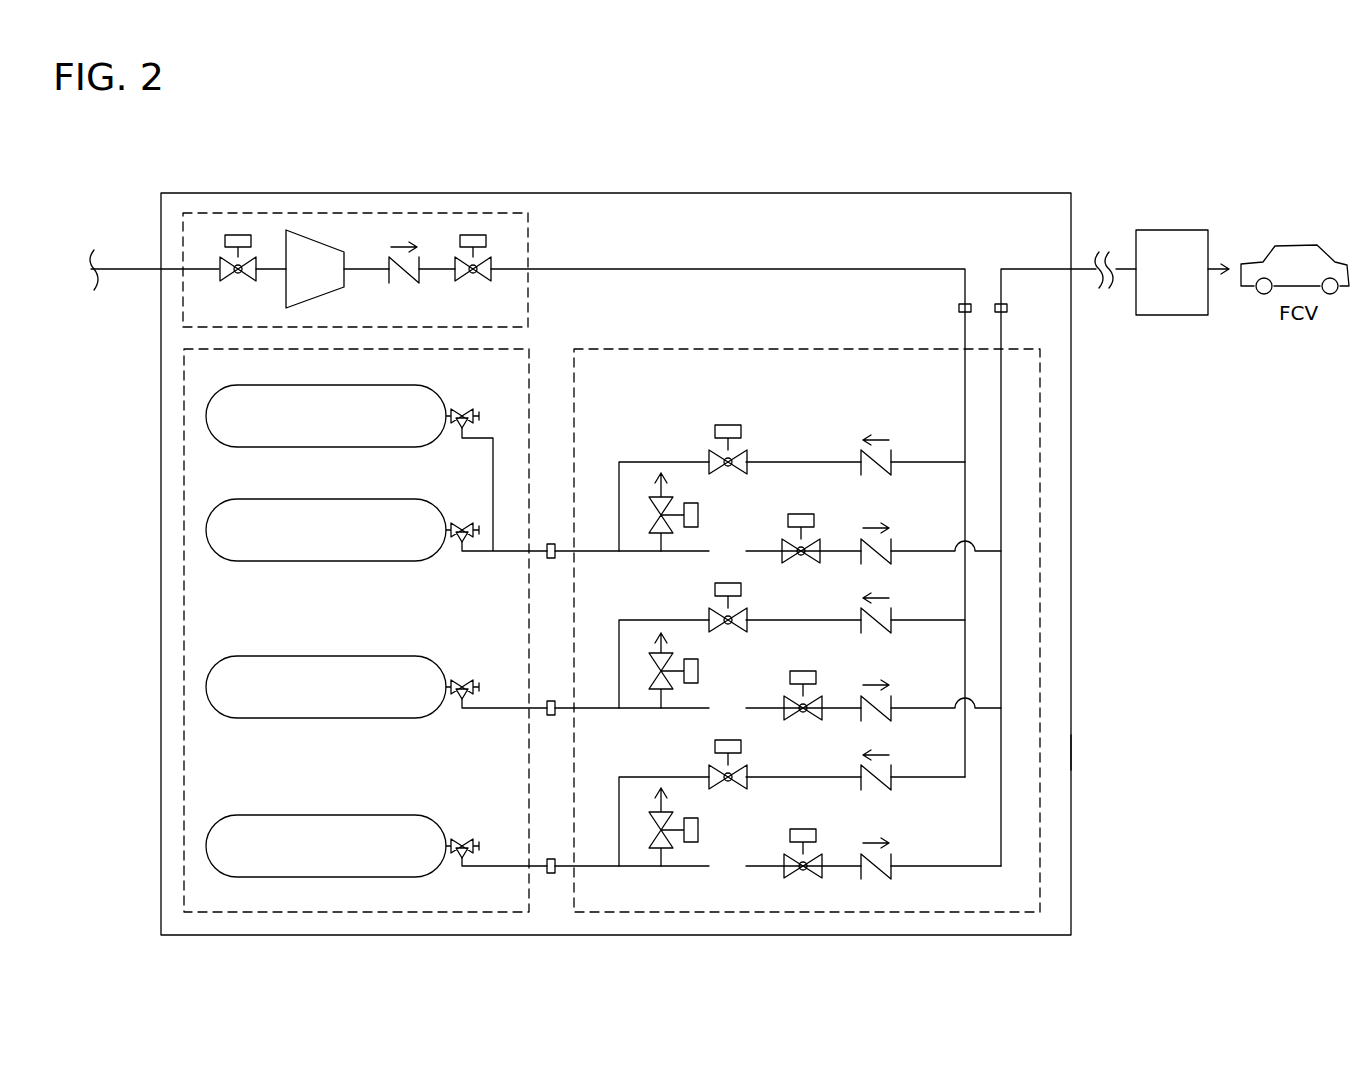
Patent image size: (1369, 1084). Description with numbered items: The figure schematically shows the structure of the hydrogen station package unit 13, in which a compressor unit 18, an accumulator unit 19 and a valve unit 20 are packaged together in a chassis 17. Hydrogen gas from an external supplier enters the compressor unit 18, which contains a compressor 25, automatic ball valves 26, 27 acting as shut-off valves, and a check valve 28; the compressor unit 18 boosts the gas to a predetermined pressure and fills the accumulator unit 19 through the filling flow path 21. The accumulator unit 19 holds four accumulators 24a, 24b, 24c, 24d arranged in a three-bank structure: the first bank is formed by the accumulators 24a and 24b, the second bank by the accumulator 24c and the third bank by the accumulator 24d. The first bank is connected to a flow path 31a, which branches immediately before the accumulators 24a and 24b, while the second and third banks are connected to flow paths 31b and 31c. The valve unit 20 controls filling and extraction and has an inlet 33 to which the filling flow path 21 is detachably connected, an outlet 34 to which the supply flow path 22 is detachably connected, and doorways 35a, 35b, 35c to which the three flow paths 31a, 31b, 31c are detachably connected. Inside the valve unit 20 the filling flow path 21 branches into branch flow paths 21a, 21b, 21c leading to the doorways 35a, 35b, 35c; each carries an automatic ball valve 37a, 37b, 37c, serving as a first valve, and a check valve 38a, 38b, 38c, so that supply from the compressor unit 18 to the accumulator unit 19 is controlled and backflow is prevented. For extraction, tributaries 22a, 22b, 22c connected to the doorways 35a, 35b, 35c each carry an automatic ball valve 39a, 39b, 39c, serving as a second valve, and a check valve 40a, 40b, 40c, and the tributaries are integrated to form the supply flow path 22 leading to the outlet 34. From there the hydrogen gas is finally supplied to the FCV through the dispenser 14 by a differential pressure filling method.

The hydrogen station package unit 13 is at (695, 184).
The dispenser 14 is at (1175, 296).
The chassis 17 is at (1070, 750).
The compressor unit 18 is at (362, 213).
The accumulator unit 19 is at (183, 615).
The valve unit 20 is at (1039, 668).
The filling flow path 21 is at (818, 269).
The supply flow path 22 is at (1018, 269).
The branch flow path 21a is at (693, 462).
The branch flow path 21b is at (678, 620).
The branch flow path 21c is at (685, 777).
The tributary 22a is at (748, 551).
The tributary 22b is at (762, 708).
The tributary 22c is at (755, 866).
The accumulator 24a is at (222, 408).
The accumulator 24b is at (222, 522).
The accumulator 24c is at (222, 690).
The accumulator 24d is at (228, 842).
The compressor 25 is at (310, 262).
The automatic ball valve 26 is at (237, 235).
The automatic ball valve 27 is at (473, 242).
The check valve 28 is at (418, 258).
The flow path 31a is at (512, 551).
The flow path 31b is at (500, 708).
The flow path 31c is at (507, 866).
The inlet 33 is at (958, 308).
The outlet 34 is at (1006, 310).
The doorway 35a is at (550, 544).
The doorway 35b is at (550, 701).
The doorway 35c is at (550, 859).
The automatic ball valve 37a is at (740, 450).
The automatic ball valve 37b is at (742, 620).
The automatic ball valve 37c is at (742, 777).
The check valve 38a is at (890, 455).
The check valve 38b is at (890, 612).
The check valve 38c is at (890, 770).
The automatic ball valve 39a is at (813, 540).
The automatic ball valve 39b is at (815, 697).
The automatic ball valve 39c is at (815, 855).
The check valve 40a is at (893, 545).
The check valve 40b is at (893, 702).
The check valve 40c is at (893, 860).